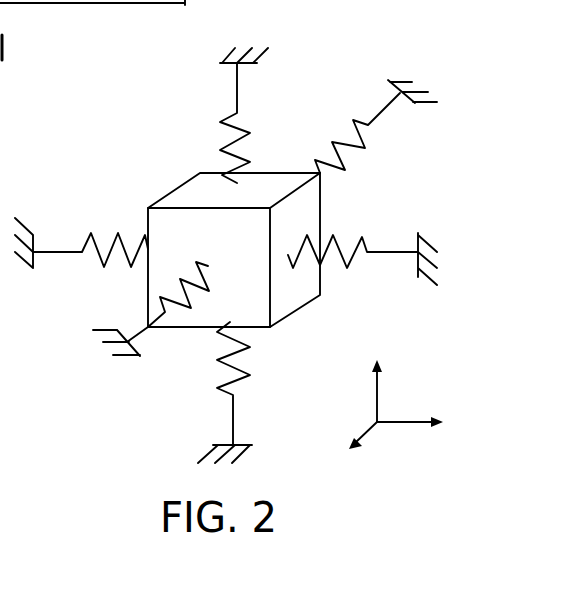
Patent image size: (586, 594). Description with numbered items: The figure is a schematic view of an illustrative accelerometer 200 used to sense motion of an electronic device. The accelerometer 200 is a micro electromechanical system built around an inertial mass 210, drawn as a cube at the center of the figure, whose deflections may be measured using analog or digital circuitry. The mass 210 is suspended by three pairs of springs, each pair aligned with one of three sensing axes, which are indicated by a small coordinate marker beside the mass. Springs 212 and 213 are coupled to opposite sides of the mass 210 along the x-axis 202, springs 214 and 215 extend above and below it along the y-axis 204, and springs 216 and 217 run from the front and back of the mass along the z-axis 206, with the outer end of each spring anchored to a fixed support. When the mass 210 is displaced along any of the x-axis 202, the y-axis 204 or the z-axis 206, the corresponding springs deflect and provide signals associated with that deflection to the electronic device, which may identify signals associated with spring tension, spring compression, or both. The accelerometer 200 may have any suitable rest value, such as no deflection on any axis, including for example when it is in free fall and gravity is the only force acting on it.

The accelerometer 200 is at (407, 36).
The x-axis 202 is at (402, 424).
The y-axis 204 is at (372, 385).
The z-axis 206 is at (368, 432).
The inertial mass 210 is at (188, 191).
The spring 212 is at (362, 238).
The spring 213 is at (89, 235).
The spring 214 is at (250, 133).
The spring 215 is at (217, 388).
The spring 216 is at (160, 297).
The spring 217 is at (365, 148).